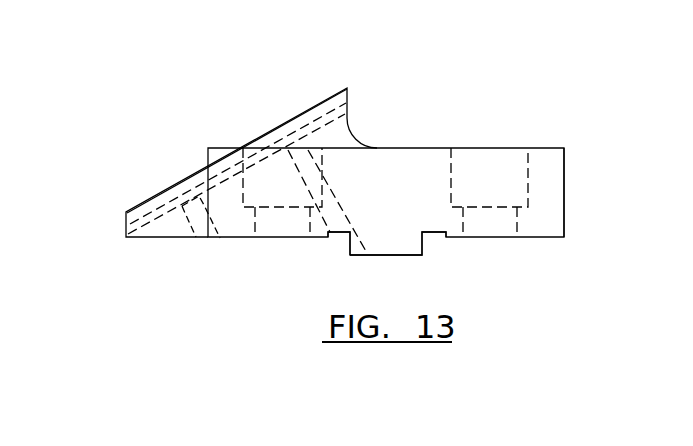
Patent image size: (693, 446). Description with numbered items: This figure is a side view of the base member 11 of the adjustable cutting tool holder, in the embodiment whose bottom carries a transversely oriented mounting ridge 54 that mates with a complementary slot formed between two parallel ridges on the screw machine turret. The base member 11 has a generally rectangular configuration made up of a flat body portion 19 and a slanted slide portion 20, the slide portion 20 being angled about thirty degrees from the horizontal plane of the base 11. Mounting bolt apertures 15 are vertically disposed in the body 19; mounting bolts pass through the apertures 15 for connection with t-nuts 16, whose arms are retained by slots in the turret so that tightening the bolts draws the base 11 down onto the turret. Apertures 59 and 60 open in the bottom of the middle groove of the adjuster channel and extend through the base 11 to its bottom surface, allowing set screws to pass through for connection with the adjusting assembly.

The base member 11 is at (594, 121).
The mounting bolt apertures 15 is at (102, 202).
The t-nuts 16 is at (123, 206).
The flat body portion 19 is at (538, 148).
The slanted slide portion 20 is at (203, 107).
The mounting ridge 54 is at (427, 257).
The aperture 59 is at (217, 237).
The aperture 60 is at (355, 255).